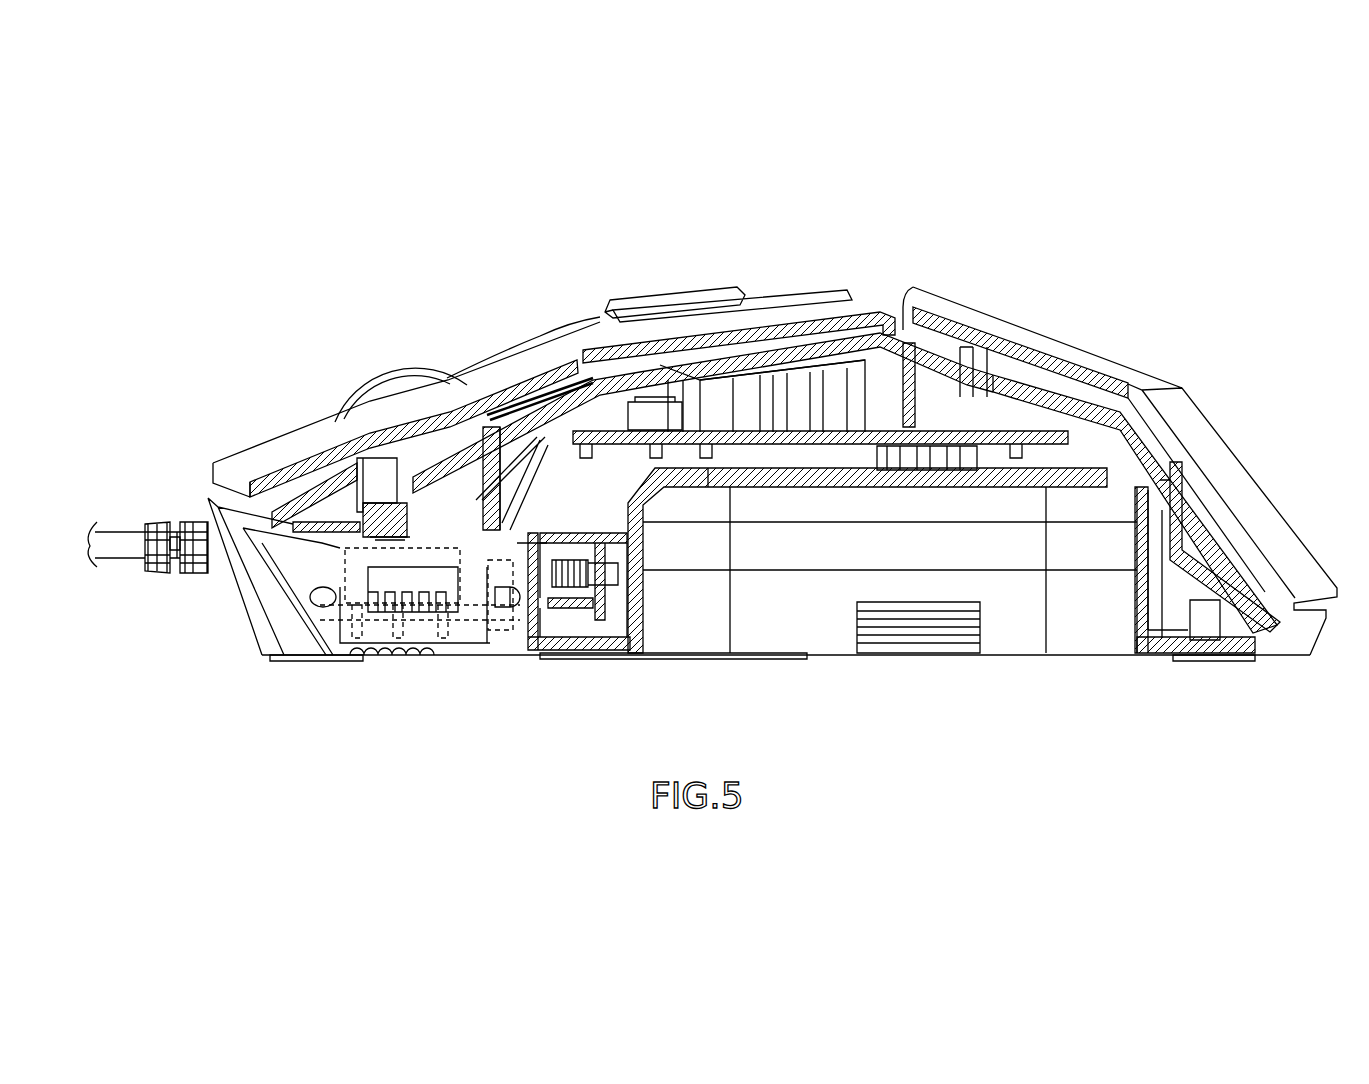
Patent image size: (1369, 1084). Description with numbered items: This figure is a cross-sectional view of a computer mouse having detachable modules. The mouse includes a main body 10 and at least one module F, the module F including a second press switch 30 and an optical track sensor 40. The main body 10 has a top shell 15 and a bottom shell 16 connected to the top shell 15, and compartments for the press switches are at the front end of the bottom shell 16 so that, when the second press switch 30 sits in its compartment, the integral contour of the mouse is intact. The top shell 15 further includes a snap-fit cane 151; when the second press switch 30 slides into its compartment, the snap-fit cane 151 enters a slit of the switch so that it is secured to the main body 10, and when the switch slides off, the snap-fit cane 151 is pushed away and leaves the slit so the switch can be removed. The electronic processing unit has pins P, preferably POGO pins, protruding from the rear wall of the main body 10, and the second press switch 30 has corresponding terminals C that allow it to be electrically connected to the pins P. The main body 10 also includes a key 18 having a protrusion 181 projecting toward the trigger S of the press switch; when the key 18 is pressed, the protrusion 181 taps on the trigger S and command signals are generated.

The main body 10 is at (1012, 305).
The top shell 15 is at (660, 365).
The snap-fit cane 151 is at (510, 463).
The protrusion 181 is at (388, 525).
The key 18 is at (276, 455).
The bottom shell 16 is at (250, 598).
The second press switch 30 is at (297, 626).
The optical track sensor 40 is at (1015, 628).
The trigger S is at (380, 548).
The terminal C is at (500, 610).
The pin P is at (548, 640).
The module F is at (1056, 735).